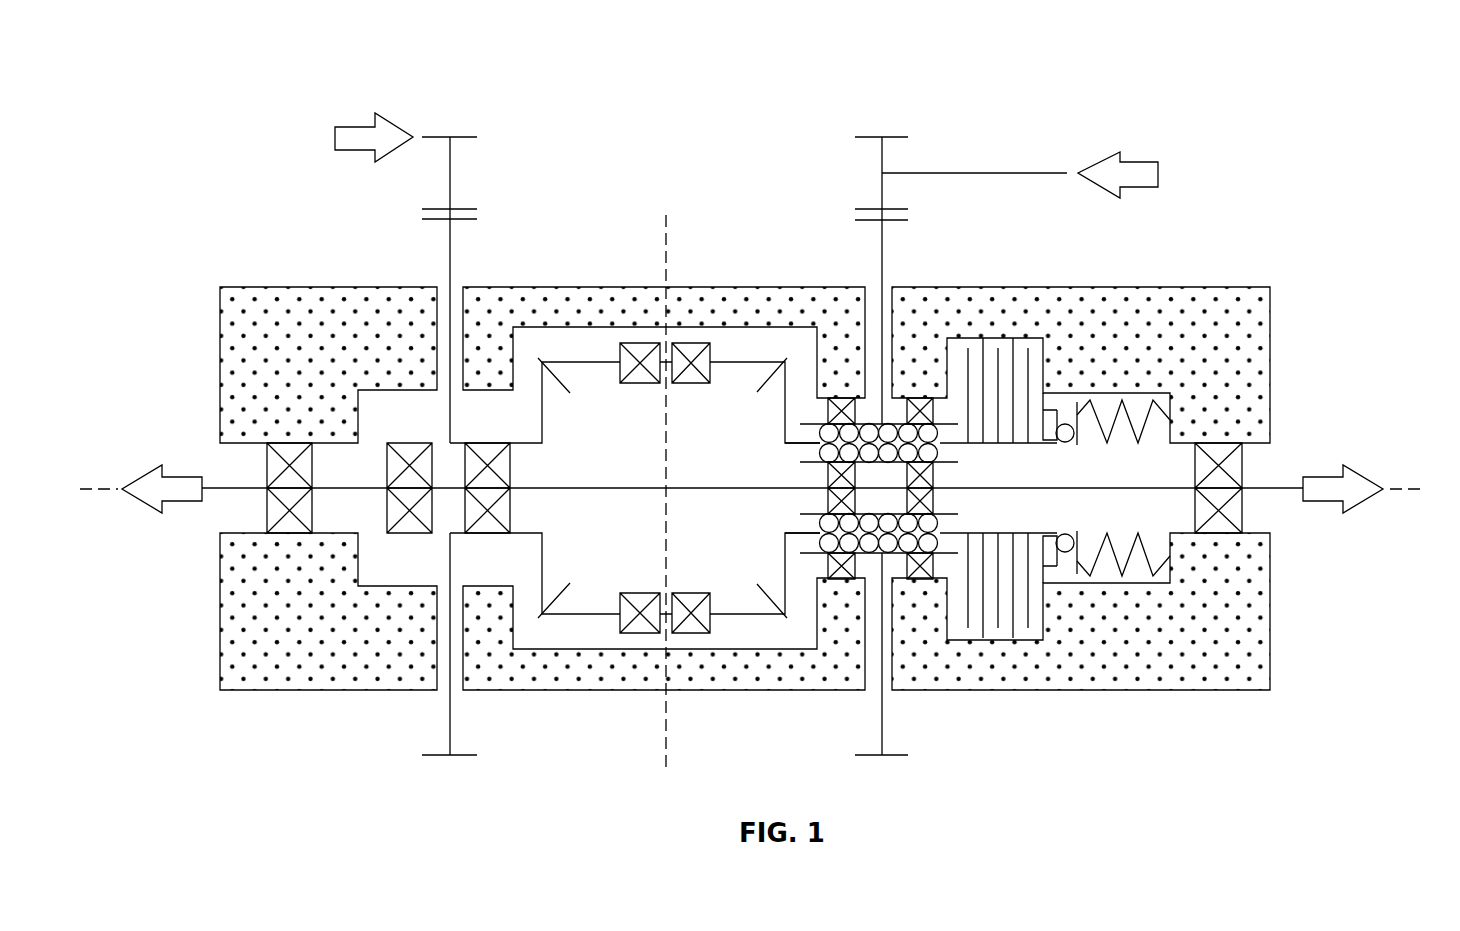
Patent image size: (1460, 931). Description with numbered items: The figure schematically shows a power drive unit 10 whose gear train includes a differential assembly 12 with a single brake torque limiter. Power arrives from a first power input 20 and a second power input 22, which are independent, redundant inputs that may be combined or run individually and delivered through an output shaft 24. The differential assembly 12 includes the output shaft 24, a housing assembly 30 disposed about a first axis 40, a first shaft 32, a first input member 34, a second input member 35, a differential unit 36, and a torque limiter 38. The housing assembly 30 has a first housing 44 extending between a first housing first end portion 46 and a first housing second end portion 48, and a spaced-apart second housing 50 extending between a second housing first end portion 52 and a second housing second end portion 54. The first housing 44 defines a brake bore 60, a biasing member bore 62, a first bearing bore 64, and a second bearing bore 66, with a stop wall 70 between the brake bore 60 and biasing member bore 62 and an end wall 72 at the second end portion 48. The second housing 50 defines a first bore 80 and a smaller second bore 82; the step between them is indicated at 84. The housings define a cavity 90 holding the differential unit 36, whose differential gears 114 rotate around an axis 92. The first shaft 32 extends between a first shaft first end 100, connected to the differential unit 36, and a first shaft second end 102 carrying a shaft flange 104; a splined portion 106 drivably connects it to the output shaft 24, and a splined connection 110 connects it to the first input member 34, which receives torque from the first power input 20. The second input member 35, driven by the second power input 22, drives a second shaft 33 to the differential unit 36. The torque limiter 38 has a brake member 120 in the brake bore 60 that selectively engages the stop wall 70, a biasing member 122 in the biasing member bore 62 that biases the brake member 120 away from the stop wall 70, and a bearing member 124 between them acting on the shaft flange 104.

The power drive unit 10 is at (1264, 64).
The differential assembly 12 is at (1264, 128).
The first power input 20 is at (1135, 160).
The second power input 22 is at (353, 127).
The output shaft 24 is at (652, 486).
The housing assembly 30 is at (630, 178).
The first shaft 32 is at (800, 452).
The second shaft 33 is at (524, 451).
The first input member 34 is at (868, 258).
The second input member 35 is at (465, 250).
The differential unit 36 is at (598, 265).
The torque limiter 38 is at (984, 472).
The first axis 40 is at (1400, 492).
The first housing 44 is at (1090, 708).
The first housing first end portion 46 is at (905, 665).
The first housing second end portion 48 is at (1235, 665).
The second housing 50 is at (310, 708).
The second housing first end portion 52 is at (415, 645).
The second housing second end portion 54 is at (262, 645).
The brake bore 60 is at (990, 342).
The biasing member bore 62 is at (1140, 390).
The first bearing bore 64 is at (895, 403).
The second bearing bore 66 is at (1250, 447).
The stop wall 70 is at (1085, 398).
The end wall 72 is at (1165, 410).
The first bore 80 is at (404, 403).
The second bore 82 is at (327, 463).
The housing step 84 is at (360, 423).
The cavity 90 is at (540, 630).
The axis 92 is at (663, 748).
The first shaft first end 100 is at (785, 440).
The first shaft second end 102 is at (987, 450).
The shaft flange 104 is at (1137, 390).
The splined portion 106 is at (850, 547).
The splined connection 110 is at (942, 545).
The differential gears 114 is at (773, 380).
The brake member 120 is at (1035, 350).
The biasing member 122 is at (1121, 444).
The bearing member 124 is at (1066, 455).